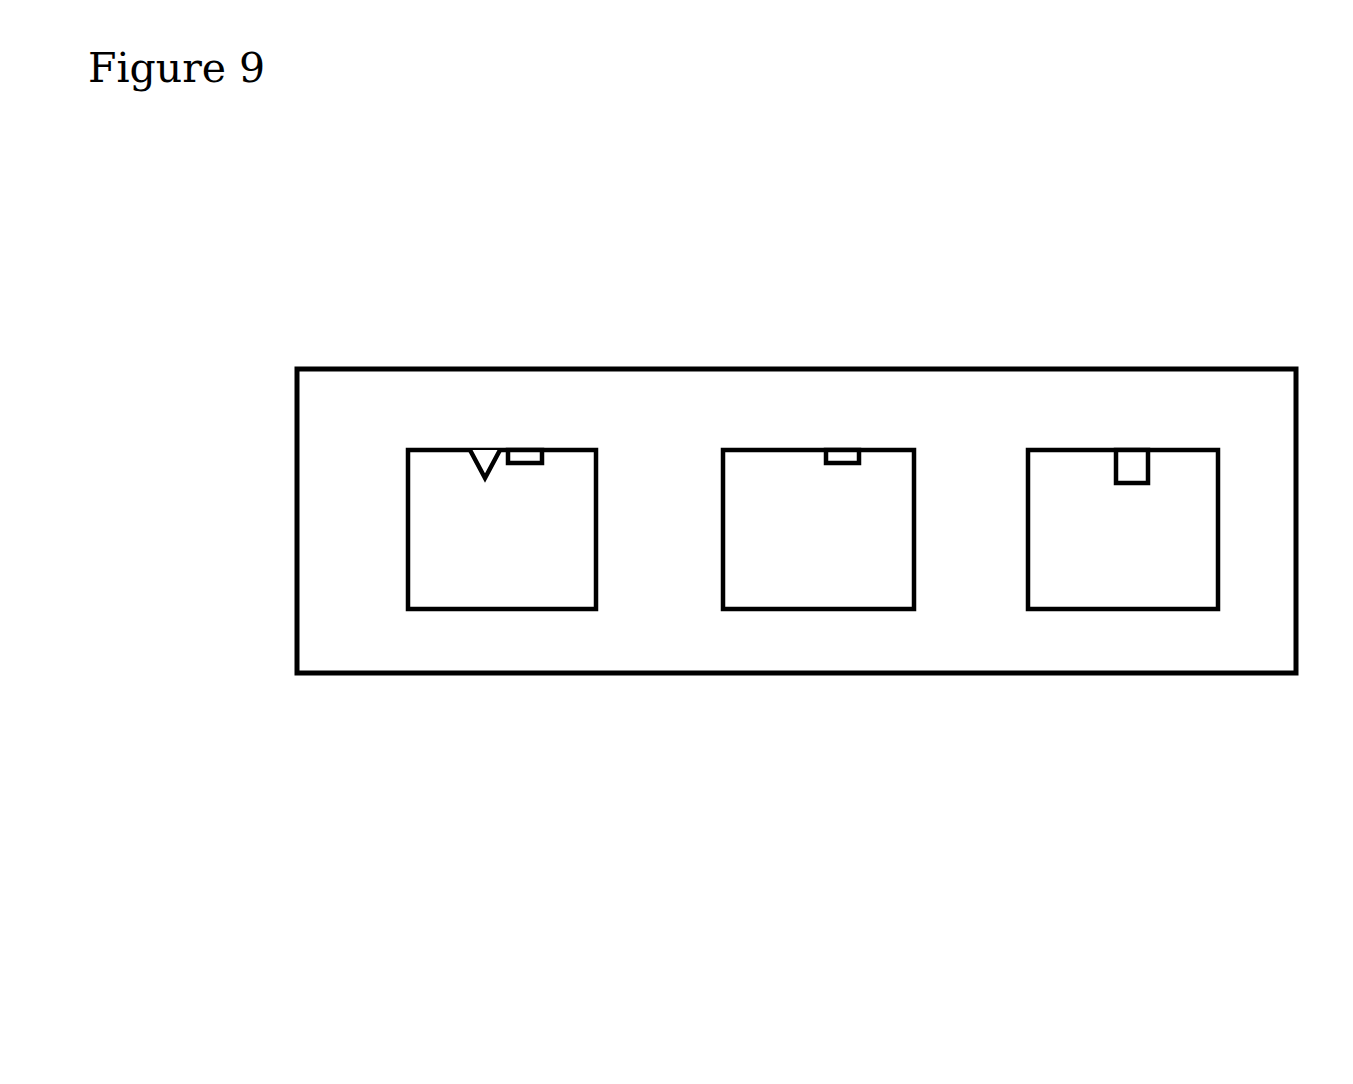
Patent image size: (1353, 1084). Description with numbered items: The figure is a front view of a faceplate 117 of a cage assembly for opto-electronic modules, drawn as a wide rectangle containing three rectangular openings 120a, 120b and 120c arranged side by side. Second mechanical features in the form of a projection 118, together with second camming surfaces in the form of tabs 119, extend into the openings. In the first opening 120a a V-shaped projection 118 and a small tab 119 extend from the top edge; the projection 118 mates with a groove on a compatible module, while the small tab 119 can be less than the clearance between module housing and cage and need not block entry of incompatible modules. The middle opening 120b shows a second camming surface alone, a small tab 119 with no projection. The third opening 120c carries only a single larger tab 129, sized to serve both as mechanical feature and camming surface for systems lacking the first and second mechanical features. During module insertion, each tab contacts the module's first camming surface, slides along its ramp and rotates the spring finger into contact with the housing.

The faceplate 117 is at (330, 422).
The projection 118 is at (487, 452).
The tab 119 is at (527, 450).
The tab 129 is at (1127, 463).
The opening 120a is at (480, 573).
The opening 120b is at (768, 583).
The opening 120c is at (1098, 578).